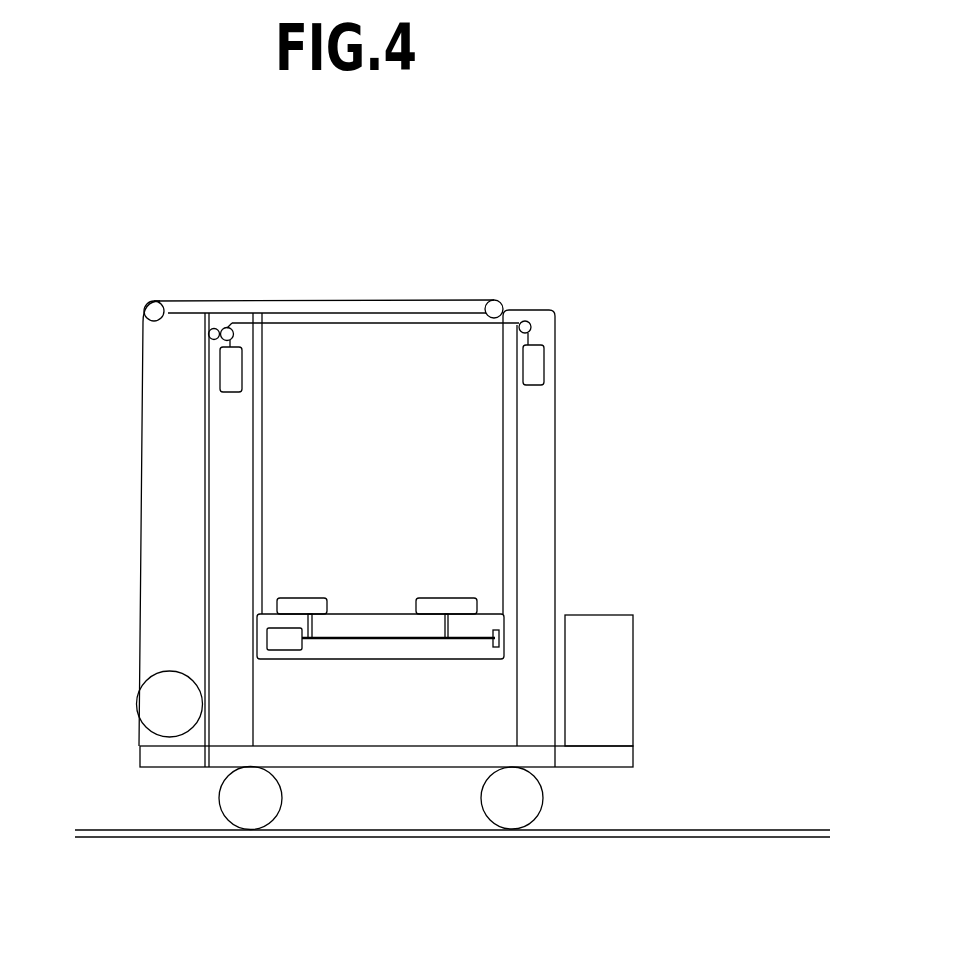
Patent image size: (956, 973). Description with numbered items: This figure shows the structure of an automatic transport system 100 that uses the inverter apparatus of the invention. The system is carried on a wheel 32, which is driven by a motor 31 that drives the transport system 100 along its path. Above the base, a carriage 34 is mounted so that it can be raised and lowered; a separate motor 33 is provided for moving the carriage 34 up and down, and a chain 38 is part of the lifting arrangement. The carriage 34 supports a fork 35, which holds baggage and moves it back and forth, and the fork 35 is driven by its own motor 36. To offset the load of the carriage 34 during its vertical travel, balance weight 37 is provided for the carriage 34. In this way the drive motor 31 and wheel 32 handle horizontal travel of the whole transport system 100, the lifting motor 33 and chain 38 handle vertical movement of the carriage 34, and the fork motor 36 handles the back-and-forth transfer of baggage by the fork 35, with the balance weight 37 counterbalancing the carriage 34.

The automatic transport system 100 is at (548, 311).
The motor 31 is at (612, 606).
The wheel 32 is at (267, 804).
The motor 33 is at (145, 711).
The carriage 34 is at (373, 614).
The fork 35 is at (303, 606).
The motor 36 is at (287, 641).
The balance weight 37 is at (238, 378).
The chain 38 is at (139, 549).